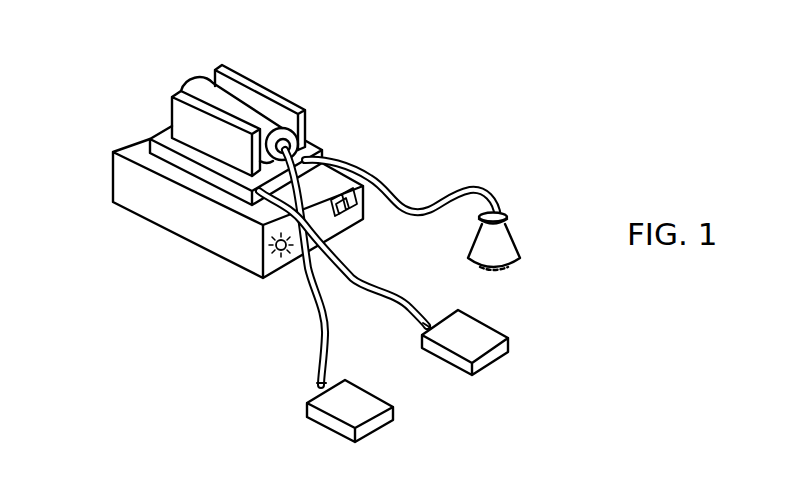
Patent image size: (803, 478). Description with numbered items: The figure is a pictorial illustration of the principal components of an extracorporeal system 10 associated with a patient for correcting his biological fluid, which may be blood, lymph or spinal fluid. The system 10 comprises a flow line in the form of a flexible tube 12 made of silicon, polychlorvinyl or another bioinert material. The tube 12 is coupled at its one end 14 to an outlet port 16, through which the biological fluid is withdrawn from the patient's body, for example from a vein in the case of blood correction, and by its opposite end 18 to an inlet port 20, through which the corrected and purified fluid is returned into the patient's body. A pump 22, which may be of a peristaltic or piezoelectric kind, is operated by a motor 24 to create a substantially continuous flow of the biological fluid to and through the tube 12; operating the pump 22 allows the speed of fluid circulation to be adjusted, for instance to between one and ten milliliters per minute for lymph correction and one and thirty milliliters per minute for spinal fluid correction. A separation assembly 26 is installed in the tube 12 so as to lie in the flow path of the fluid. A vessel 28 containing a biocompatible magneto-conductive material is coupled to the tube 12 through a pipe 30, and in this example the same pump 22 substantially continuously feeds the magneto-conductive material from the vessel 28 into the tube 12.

The extracorporeal system 10 is at (316, 250).
The flexible tube 12 is at (317, 328).
The one end of tube 14 is at (322, 385).
The outlet port 16 is at (370, 408).
The opposite end of tube 18 is at (423, 310).
The inlet port 20 is at (477, 340).
The pump 22 is at (199, 157).
The motor 24 is at (123, 178).
The separation assembly 26 is at (193, 83).
The vessel 28 is at (498, 237).
The pipe 30 is at (407, 197).